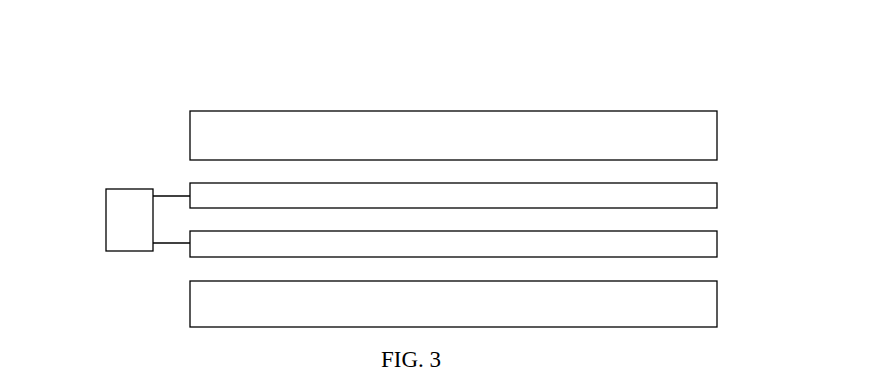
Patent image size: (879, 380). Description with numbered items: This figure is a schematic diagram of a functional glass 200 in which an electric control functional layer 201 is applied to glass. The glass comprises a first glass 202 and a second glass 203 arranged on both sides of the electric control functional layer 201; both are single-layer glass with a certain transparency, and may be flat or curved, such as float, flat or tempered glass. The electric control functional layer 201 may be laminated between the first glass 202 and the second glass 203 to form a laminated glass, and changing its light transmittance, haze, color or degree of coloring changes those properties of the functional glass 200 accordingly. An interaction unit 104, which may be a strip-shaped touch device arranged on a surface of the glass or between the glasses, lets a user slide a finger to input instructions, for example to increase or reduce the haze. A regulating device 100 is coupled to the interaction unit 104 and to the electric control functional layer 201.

The functional glass 200 is at (486, 55).
The first glass 202 is at (717, 128).
The electric control functional layer 201 is at (717, 197).
The interaction unit 104 is at (717, 245).
The second glass 203 is at (717, 305).
The regulating device 100 is at (106, 213).